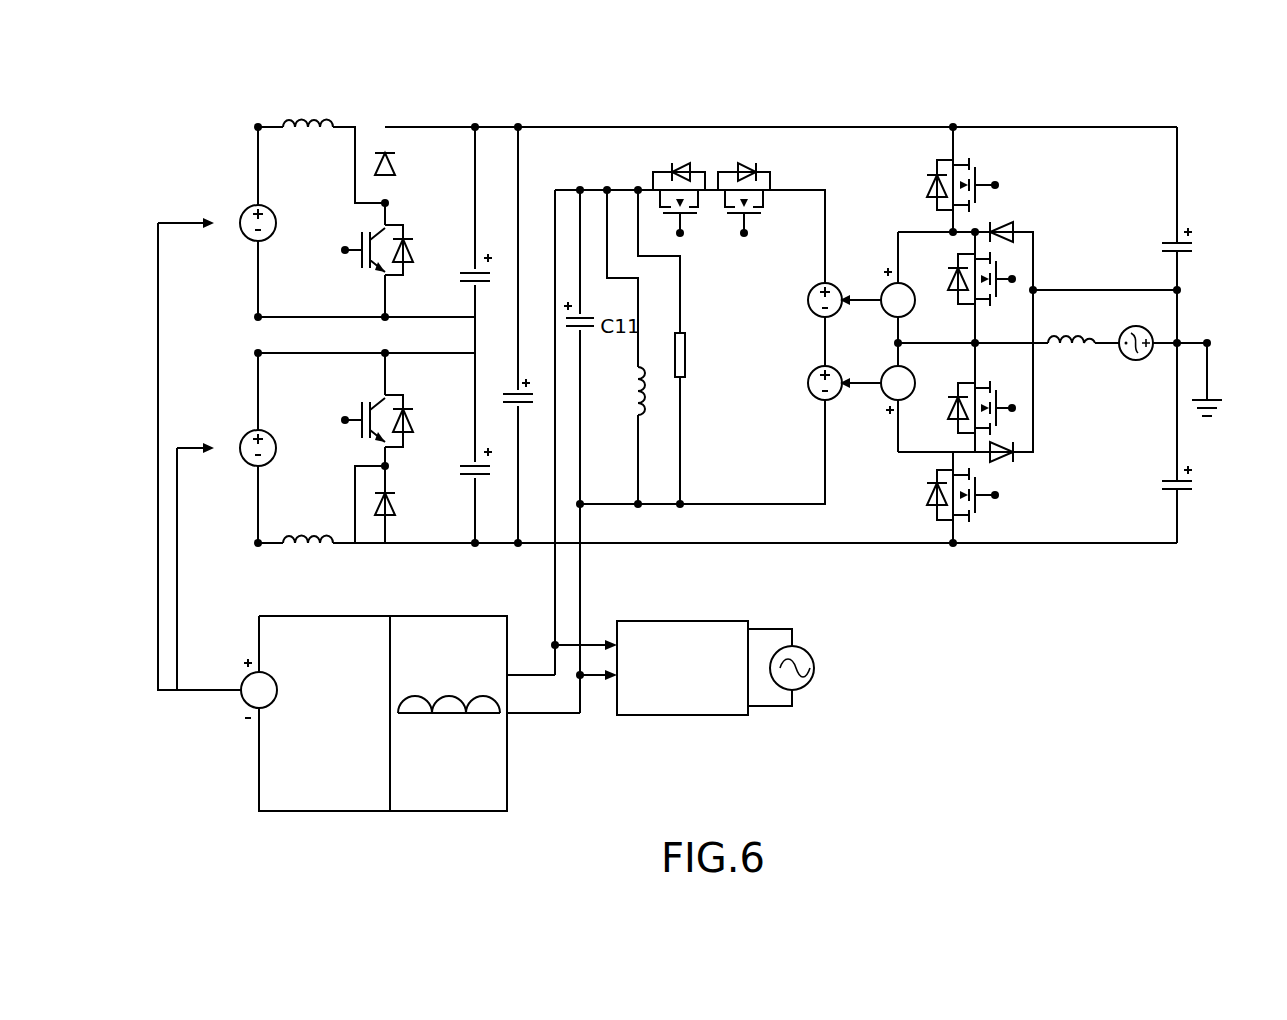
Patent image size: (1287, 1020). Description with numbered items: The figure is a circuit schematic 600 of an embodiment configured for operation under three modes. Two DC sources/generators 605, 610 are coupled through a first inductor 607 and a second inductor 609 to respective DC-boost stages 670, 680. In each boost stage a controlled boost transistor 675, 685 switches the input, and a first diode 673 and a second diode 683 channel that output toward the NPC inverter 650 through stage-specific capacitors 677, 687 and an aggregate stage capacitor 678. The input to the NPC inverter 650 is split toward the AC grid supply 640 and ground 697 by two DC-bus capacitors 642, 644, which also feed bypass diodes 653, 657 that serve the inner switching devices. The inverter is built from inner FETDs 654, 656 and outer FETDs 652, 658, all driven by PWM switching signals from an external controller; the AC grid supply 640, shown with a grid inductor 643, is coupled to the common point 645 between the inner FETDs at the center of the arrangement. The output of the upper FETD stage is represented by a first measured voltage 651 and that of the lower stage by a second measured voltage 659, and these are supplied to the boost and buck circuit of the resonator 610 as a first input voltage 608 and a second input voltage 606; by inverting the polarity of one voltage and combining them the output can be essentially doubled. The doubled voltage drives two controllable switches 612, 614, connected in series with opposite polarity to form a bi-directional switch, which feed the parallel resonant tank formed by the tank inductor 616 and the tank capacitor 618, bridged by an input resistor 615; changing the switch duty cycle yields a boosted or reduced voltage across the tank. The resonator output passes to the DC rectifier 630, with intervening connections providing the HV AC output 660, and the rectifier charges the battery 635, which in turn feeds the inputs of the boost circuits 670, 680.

The circuit schematic 600 is at (902, 87).
The DC source/generator 605 is at (253, 243).
The voltage V6 606 is at (815, 400).
The inductor L2 607 is at (310, 118).
The voltage V5 608 is at (812, 322).
The inductor L3 609 is at (328, 558).
The DC source/generator / resonator 610 is at (272, 432).
The FETD21 612 is at (648, 178).
The FETD16 614 is at (778, 172).
The input resistor R17 615 is at (700, 337).
The inductor L7 616 is at (632, 398).
The capacitor C11 618 is at (597, 305).
The DC rectifier 630 is at (452, 812).
The battery 635 is at (322, 812).
The AC Grid supply 640 is at (1138, 363).
The capacitor C8 642 is at (1190, 258).
The inductor L6 643 is at (1070, 335).
The capacitor C9 644 is at (1190, 495).
The common point 645 is at (980, 348).
The NPC inverter 650 is at (1016, 167).
The voltage Vm12 651 is at (888, 315).
The FETD19 652 is at (922, 202).
The diode D6 653 is at (1020, 225).
The FETD17 654 is at (1000, 318).
The FETD18 656 is at (1020, 410).
The diode D7 657 is at (1025, 465).
The FETD20 658 is at (932, 520).
The voltage Vm13 659 is at (885, 403).
The HV AC output 660 is at (702, 716).
The DC-boost stage 670 is at (408, 108).
The diode D3 673 is at (405, 185).
The controlled boost transistor 675 is at (410, 265).
The capacitor C5 677 is at (492, 285).
The capacitor C7 678 is at (540, 402).
The DC-boost stage 680 is at (432, 562).
The diode D2 683 is at (378, 527).
The controlled boost transistor 685 is at (420, 418).
The capacitor C6 687 is at (492, 478).
The ground 697 is at (1215, 395).